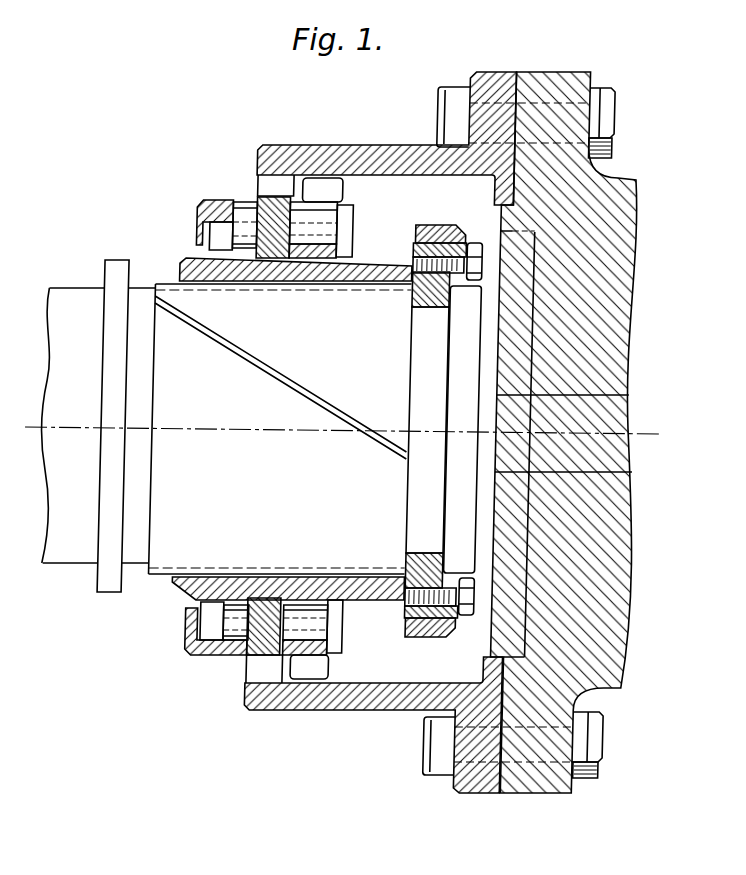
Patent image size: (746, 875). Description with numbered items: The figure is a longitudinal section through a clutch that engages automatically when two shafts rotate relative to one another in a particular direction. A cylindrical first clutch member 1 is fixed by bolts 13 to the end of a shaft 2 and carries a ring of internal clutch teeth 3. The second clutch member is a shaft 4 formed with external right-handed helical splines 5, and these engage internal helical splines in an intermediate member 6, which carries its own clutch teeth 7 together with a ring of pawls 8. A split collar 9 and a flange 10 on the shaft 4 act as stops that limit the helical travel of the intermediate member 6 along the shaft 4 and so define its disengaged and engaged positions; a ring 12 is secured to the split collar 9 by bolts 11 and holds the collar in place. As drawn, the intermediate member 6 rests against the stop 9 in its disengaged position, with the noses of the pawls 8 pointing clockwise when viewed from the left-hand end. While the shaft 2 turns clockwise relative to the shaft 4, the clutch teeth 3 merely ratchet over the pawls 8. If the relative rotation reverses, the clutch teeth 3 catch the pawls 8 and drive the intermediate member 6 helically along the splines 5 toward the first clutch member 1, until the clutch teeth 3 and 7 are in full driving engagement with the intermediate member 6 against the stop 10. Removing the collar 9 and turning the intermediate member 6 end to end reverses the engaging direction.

The first clutch member 1 is at (340, 706).
The shaft 2 is at (613, 192).
The internal clutch teeth 3 is at (253, 673).
The shaft 4 is at (76, 560).
The external right-handed helical splines 5 is at (163, 284).
The intermediate member 6 is at (376, 267).
The clutch teeth 7 is at (338, 663).
The pawls 8 is at (236, 205).
The split collar 9 is at (408, 312).
The flange 10 is at (109, 270).
The bolts 11 is at (473, 243).
The ring 12 is at (434, 638).
The bolts 13 is at (597, 122).